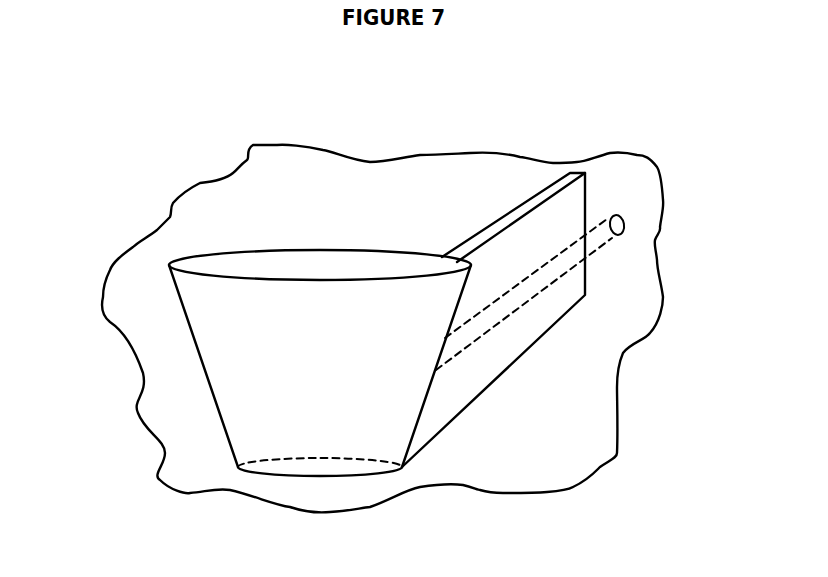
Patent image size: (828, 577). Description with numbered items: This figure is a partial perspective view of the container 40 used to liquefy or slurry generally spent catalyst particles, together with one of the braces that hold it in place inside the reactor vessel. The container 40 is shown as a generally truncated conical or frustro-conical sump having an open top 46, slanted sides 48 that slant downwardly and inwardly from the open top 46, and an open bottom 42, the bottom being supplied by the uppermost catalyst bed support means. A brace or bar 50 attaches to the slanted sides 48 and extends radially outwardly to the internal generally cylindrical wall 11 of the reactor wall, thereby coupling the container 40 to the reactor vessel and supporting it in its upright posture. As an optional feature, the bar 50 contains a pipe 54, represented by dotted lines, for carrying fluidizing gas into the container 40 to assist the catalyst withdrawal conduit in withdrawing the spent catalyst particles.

The internal generally cylindrical wall 11 is at (547, 410).
The container 40 is at (259, 222).
The open bottom 42 is at (353, 467).
The open top 46 is at (305, 250).
The slanted sides 48 is at (210, 348).
The braces or bars 50 is at (567, 217).
The pipe 54 is at (610, 240).